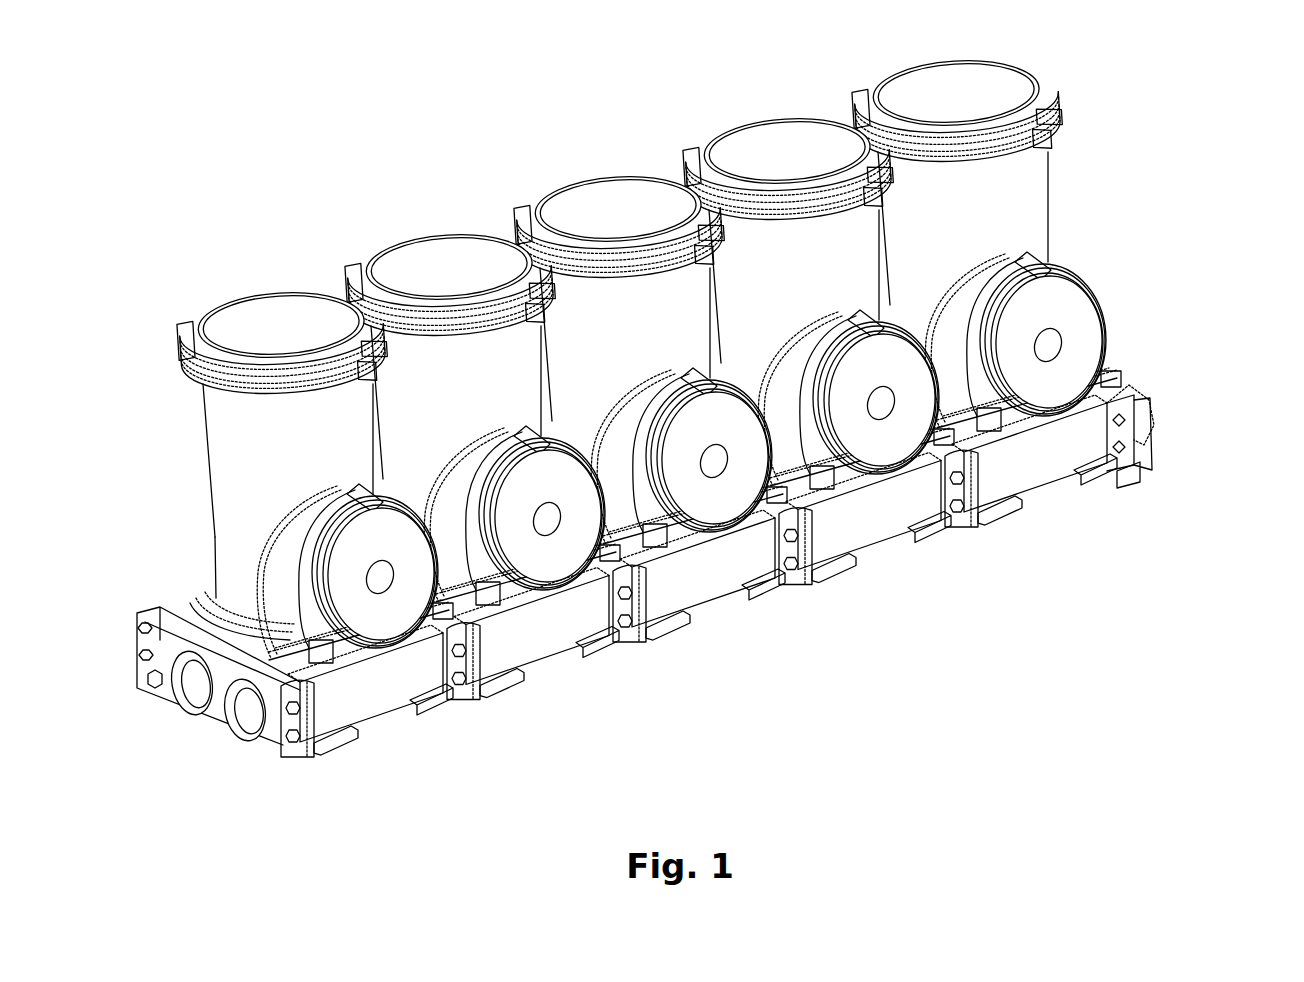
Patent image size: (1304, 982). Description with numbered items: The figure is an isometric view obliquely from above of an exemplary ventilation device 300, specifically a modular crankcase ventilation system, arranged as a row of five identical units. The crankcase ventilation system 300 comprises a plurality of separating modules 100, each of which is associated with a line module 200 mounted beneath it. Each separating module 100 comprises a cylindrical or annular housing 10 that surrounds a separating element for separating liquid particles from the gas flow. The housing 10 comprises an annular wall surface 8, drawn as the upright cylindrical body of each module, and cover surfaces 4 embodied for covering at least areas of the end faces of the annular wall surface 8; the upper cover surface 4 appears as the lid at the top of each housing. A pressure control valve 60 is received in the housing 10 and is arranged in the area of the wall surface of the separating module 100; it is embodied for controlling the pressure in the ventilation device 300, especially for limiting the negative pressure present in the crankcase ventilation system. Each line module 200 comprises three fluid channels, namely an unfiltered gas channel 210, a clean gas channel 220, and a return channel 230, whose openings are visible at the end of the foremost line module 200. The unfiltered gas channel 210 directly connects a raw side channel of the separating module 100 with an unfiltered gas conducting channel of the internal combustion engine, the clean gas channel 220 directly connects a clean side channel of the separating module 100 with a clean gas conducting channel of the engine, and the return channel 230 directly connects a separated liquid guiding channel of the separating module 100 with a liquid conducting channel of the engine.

The cover surface 4 is at (272, 337).
The annular wall surface 8 is at (275, 451).
The housing 10 is at (586, 396).
The pressure control valve 60 is at (362, 554).
The separating module 100 is at (626, 355).
The line module 200 is at (352, 700).
The unfiltered gas channel 210 is at (193, 718).
The clean gas channel 220 is at (247, 745).
The return channel 230 is at (157, 692).
The ventilation device 300 is at (685, 425).